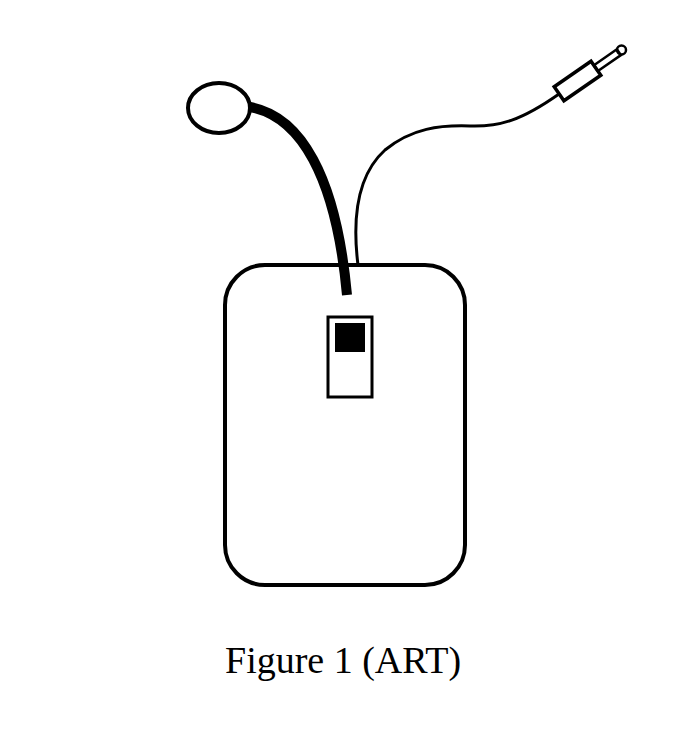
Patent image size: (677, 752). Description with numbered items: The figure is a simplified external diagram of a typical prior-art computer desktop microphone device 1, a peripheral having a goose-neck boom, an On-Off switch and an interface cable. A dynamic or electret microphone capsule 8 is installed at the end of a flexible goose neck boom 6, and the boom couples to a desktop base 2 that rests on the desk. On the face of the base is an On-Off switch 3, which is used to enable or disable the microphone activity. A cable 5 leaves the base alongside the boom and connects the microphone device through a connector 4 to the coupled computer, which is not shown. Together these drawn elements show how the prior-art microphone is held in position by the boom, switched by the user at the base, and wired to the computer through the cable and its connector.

The computer desktop microphone device 1 is at (95, 50).
The desktop base 2 is at (466, 349).
The On-Off switch 3 is at (373, 346).
The connector 4 is at (601, 79).
The cable 5 is at (356, 206).
The flexible goose neck boom 6 is at (305, 137).
The microphone capsule 8 is at (188, 111).